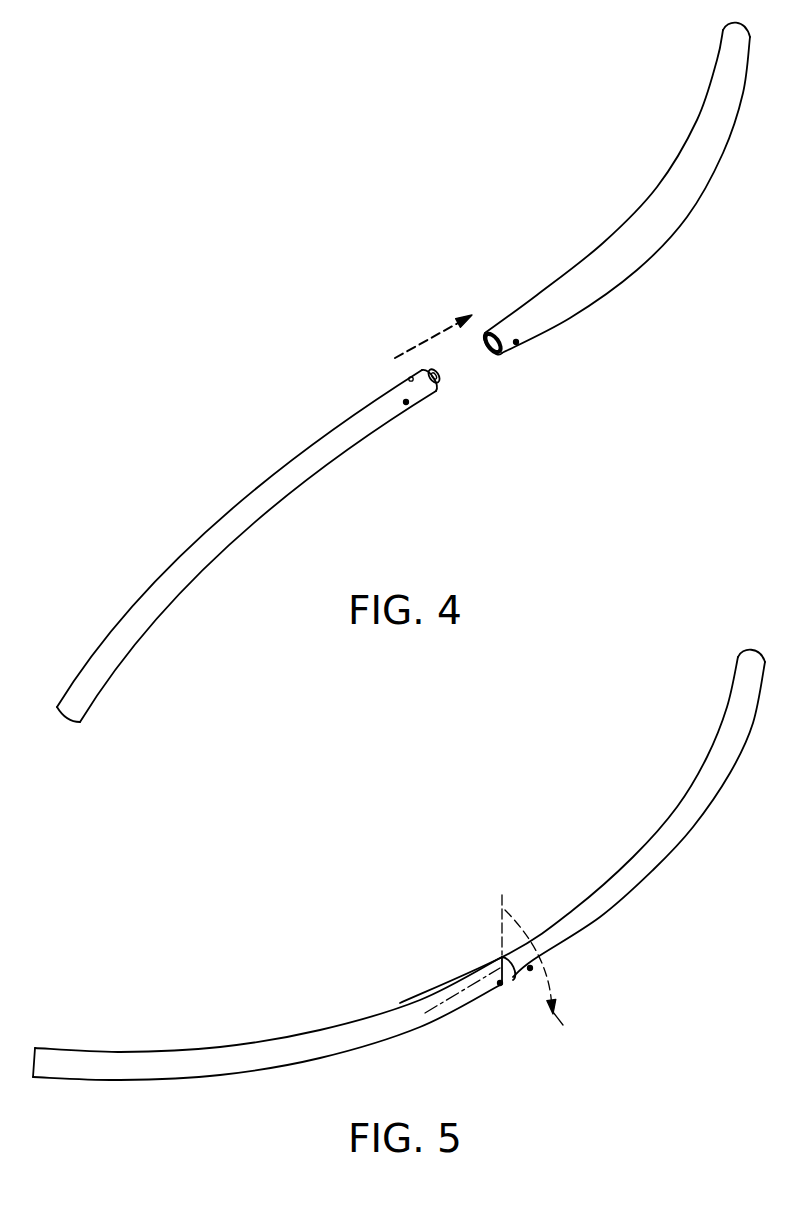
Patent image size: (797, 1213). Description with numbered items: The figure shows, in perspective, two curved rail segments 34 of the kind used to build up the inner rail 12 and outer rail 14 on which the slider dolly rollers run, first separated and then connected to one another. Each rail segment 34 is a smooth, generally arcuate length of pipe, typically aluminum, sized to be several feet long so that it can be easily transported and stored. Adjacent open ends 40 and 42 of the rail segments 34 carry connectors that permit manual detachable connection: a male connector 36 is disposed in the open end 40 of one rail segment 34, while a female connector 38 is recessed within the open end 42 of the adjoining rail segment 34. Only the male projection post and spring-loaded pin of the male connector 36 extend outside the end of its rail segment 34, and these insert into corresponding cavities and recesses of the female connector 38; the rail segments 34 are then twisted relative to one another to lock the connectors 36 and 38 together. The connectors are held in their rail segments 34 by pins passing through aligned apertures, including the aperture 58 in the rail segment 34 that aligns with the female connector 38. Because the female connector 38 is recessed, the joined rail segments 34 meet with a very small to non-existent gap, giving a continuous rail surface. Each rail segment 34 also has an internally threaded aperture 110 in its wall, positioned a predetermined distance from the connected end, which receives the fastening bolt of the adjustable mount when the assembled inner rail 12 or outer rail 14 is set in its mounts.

In FIG. 4, the rail segment 34 is at (652, 233).
In FIG. 5, the rail segment 34 is at (635, 893).
In FIG. 4, the open end 42 is at (503, 325).
In FIG. 4, the female connector 38 is at (488, 353).
In FIG. 4, the aperture 58 is at (517, 345).
In FIG. 4, the male connector 36 is at (440, 383).
In FIG. 4, the open end 40 is at (430, 388).
In FIG. 4, the internally threaded aperture 110 is at (408, 407).
In FIG. 5, the inner rail 12 is at (494, 994).
In FIG. 5, the outer rail 14 is at (476, 1046).